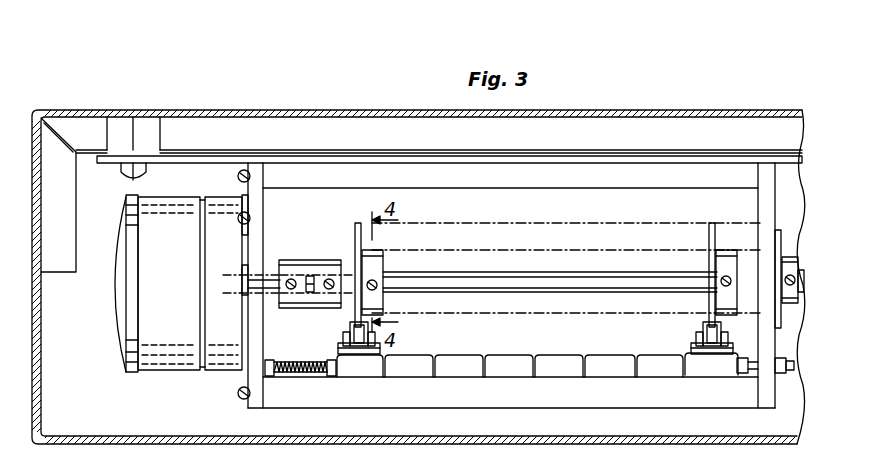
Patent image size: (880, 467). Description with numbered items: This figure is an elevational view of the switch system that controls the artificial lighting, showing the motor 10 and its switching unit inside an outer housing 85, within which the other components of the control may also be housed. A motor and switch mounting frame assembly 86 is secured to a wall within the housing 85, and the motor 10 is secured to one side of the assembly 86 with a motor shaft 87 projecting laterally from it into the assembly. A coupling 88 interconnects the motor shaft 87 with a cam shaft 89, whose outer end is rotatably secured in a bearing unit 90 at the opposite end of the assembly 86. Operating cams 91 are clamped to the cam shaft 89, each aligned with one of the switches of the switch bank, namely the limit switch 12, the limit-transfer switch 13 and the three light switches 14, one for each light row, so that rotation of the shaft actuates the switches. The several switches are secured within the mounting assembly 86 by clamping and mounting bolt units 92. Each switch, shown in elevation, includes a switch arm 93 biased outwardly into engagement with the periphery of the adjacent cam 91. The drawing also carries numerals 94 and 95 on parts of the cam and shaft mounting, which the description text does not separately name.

The motor 10 is at (147, 372).
The limit switch 12 is at (363, 373).
The limit-transfer switch 13 is at (415, 373).
The light switches 14 is at (545, 373).
The outer housing 85 is at (212, 92).
The motor and switch mounting frame assembly 86 is at (378, 147).
The motor shaft 87 is at (267, 277).
The coupling 88 is at (308, 308).
The cam shaft 89 is at (347, 276).
The bearing unit 90 is at (775, 262).
The operating cams 91 is at (357, 235).
The clamping and mounting bolt units 92 is at (306, 373).
The switch arm 93 is at (349, 331).
The bearing block 94 is at (384, 270).
The screw 95 is at (377, 288).